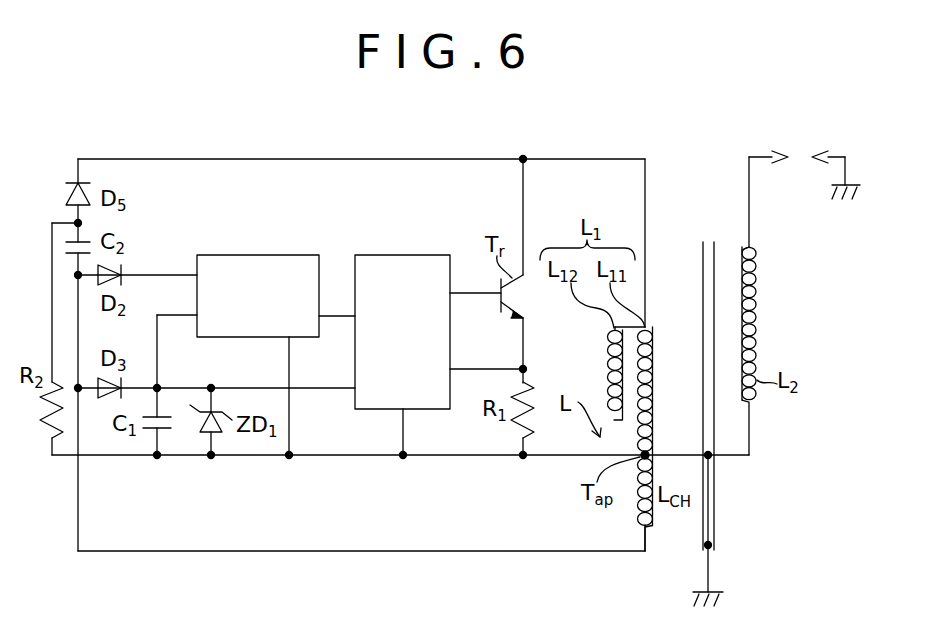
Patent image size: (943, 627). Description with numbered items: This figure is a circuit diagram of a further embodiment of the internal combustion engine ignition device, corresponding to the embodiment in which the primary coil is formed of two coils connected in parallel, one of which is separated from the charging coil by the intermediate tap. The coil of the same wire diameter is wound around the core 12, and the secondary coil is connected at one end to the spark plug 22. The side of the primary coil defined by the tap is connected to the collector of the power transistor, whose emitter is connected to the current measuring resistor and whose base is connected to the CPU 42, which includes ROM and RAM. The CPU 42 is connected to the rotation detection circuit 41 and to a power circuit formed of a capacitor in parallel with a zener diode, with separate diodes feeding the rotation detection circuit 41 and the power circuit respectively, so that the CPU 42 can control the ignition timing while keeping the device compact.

The core 12 is at (720, 242).
The spark plug 22 is at (800, 160).
The rotation detection circuit 41 is at (257, 255).
The CPU 42 is at (404, 255).